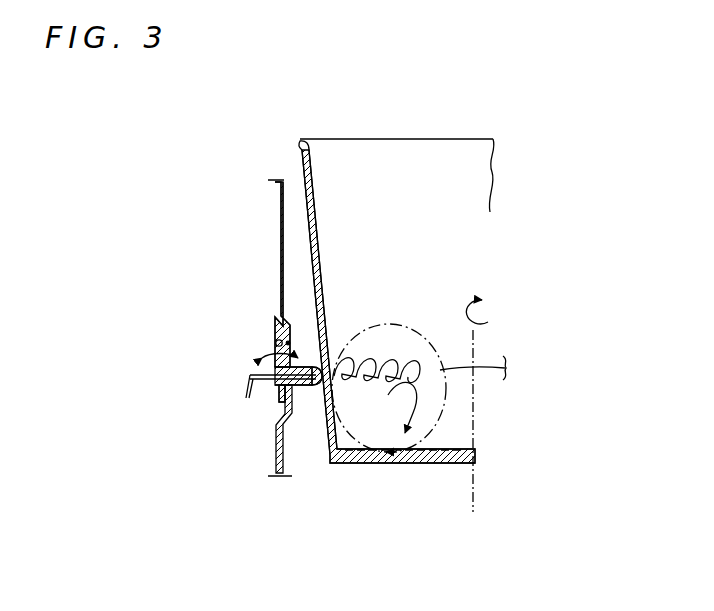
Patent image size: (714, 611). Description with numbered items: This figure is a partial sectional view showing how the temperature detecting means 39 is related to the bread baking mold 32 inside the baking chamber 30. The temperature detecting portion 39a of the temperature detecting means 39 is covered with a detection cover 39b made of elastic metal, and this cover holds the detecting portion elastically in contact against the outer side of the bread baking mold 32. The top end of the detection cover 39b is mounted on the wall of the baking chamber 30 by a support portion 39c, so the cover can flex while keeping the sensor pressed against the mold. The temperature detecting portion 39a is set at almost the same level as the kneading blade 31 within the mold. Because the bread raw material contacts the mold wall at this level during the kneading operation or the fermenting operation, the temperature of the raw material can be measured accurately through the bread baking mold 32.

The baking chamber 30 is at (273, 214).
The kneading blade 31 is at (347, 450).
The bread baking mold 32 is at (347, 158).
The temperature detecting means 39 is at (262, 361).
The temperature detecting portion 39a is at (320, 377).
The detection cover 39b is at (278, 392).
The support portion 39c is at (277, 333).